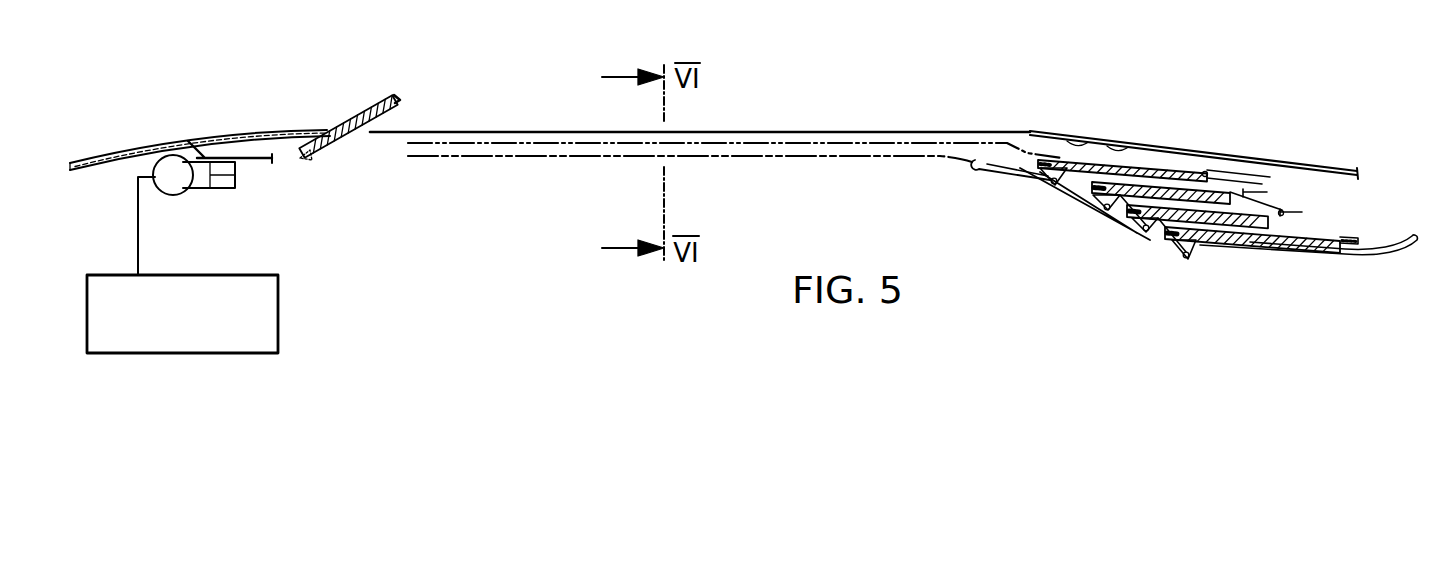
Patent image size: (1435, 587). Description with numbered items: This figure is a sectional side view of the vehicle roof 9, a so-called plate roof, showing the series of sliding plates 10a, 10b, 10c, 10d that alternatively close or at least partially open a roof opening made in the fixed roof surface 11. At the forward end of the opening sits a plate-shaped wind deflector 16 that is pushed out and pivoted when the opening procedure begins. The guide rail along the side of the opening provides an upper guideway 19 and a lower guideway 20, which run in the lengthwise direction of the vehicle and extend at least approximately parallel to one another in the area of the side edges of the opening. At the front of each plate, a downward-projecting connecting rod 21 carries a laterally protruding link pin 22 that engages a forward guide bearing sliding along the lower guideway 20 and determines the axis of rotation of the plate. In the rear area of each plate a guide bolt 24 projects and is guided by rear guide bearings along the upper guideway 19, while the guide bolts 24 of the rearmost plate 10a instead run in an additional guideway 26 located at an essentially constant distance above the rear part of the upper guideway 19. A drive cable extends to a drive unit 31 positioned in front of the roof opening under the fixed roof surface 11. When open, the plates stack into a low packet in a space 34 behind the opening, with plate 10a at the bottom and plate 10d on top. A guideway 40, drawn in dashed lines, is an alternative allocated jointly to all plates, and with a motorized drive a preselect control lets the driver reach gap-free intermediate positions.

The vehicle roof 9 is at (474, 86).
The sliding plate 10a is at (1285, 237).
The sliding plate 10b is at (1228, 215).
The sliding plate 10c is at (1160, 183).
The sliding plate 10d is at (1098, 160).
The fixed roof surface 11 is at (193, 140).
The wind deflector 16 is at (346, 120).
The upper guideway 19 is at (462, 143).
The lower guideway 20 is at (508, 157).
The connecting rod 21 is at (1135, 223).
The link pin 22 is at (1148, 230).
The guide bolt 24 is at (1242, 193).
The additional guideway 26 is at (1218, 185).
The drive unit 31 is at (176, 183).
The space 34 is at (1307, 190).
The guideway 40 is at (993, 147).